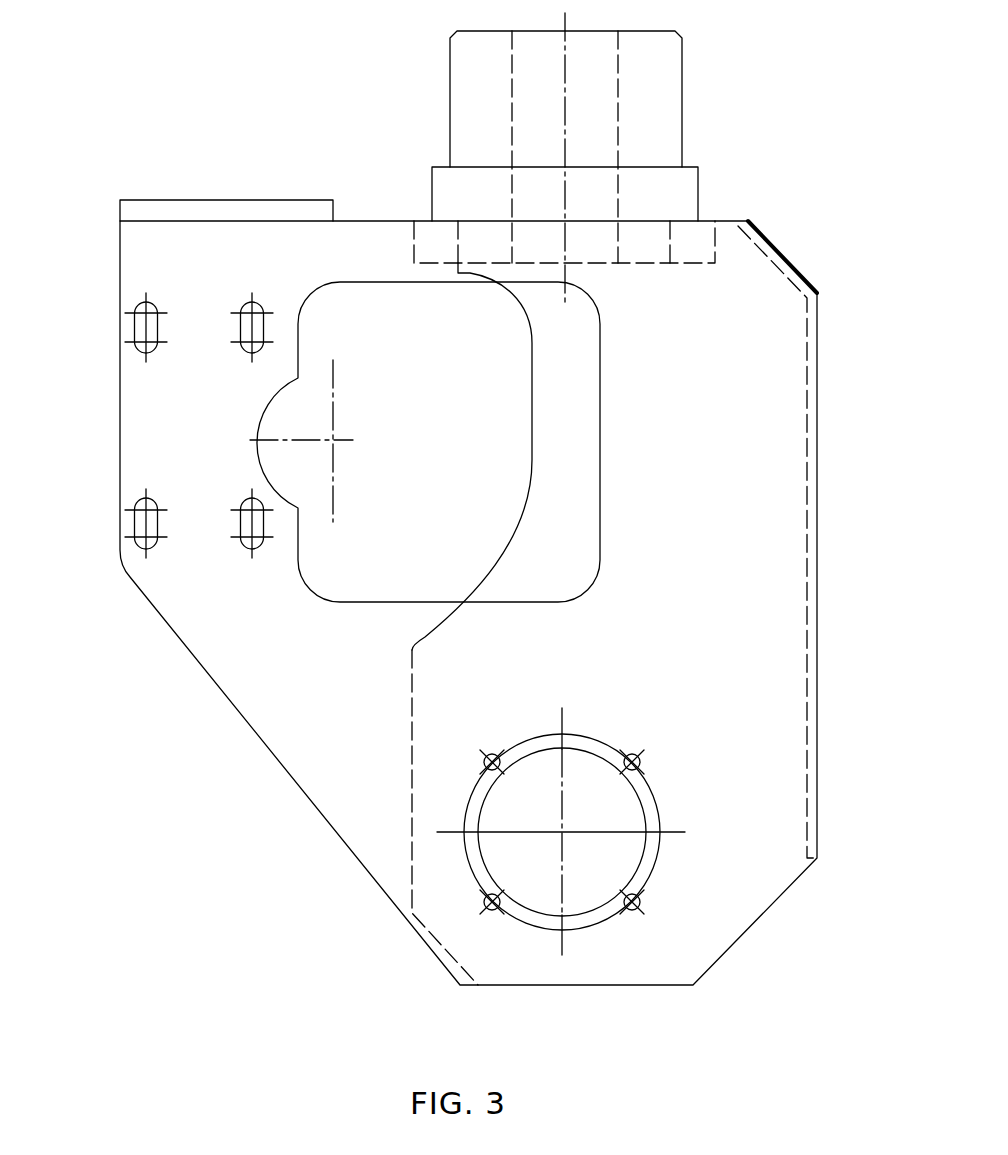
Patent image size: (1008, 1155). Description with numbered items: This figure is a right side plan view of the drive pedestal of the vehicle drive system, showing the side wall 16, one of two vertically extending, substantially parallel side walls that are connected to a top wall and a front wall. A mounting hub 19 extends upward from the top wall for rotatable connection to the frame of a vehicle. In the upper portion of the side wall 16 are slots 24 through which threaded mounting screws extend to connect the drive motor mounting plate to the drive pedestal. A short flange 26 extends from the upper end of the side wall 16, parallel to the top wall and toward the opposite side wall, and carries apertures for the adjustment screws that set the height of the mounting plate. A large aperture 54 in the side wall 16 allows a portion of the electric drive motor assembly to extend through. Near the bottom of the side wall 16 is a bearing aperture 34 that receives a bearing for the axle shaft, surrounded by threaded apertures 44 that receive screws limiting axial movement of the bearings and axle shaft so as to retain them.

The side wall 16 is at (312, 778).
The mounting hub 19 is at (667, 93).
The slots 24 is at (247, 347).
The short flange 26 is at (250, 210).
The bearing aperture 34 is at (590, 900).
The threaded apertures 44 is at (485, 765).
The aperture 54 is at (313, 588).